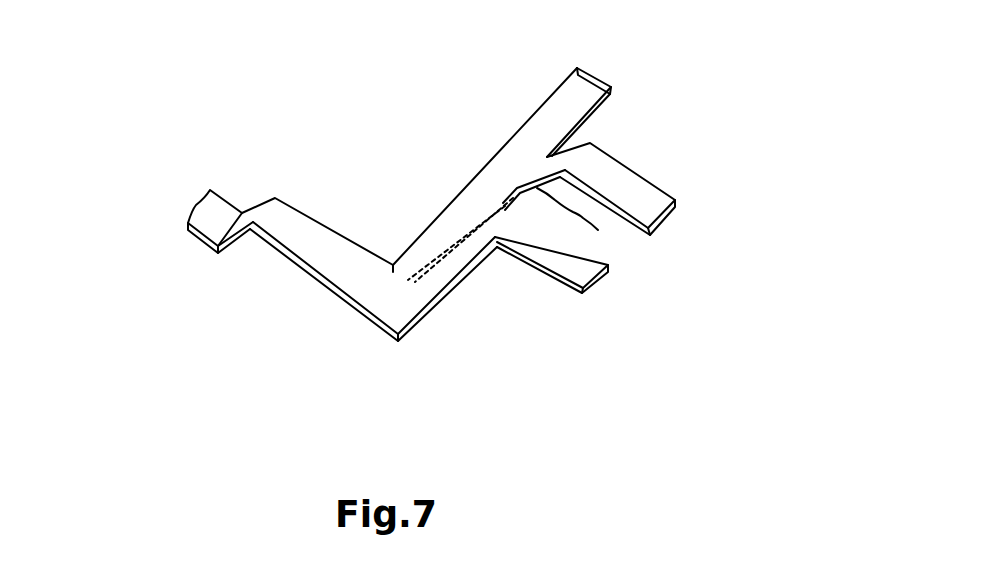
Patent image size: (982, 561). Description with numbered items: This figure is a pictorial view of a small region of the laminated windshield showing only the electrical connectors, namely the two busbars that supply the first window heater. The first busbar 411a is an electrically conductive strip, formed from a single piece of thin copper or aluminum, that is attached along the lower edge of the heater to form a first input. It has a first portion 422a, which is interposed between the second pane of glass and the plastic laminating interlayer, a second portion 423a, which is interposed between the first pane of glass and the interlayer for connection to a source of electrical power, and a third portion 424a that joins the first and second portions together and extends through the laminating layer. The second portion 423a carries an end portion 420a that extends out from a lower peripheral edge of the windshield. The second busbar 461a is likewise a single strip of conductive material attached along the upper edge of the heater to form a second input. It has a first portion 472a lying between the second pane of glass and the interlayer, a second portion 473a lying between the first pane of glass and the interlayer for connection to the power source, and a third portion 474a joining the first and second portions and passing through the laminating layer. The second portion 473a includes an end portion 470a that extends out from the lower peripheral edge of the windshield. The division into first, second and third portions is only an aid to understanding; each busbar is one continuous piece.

The first busbar 411a is at (492, 158).
The first portion of first busbar 422a is at (532, 112).
The second portion of first busbar 423a is at (628, 172).
The end portion of second portion 420a is at (666, 192).
The third portion of first busbar 424a is at (553, 180).
The second busbar 461a is at (320, 223).
The second portion of second busbar 473a is at (333, 290).
The first portion of second busbar 472a is at (193, 237).
The third portion of second busbar 474a is at (233, 250).
The end portion of second portion 470a is at (548, 278).